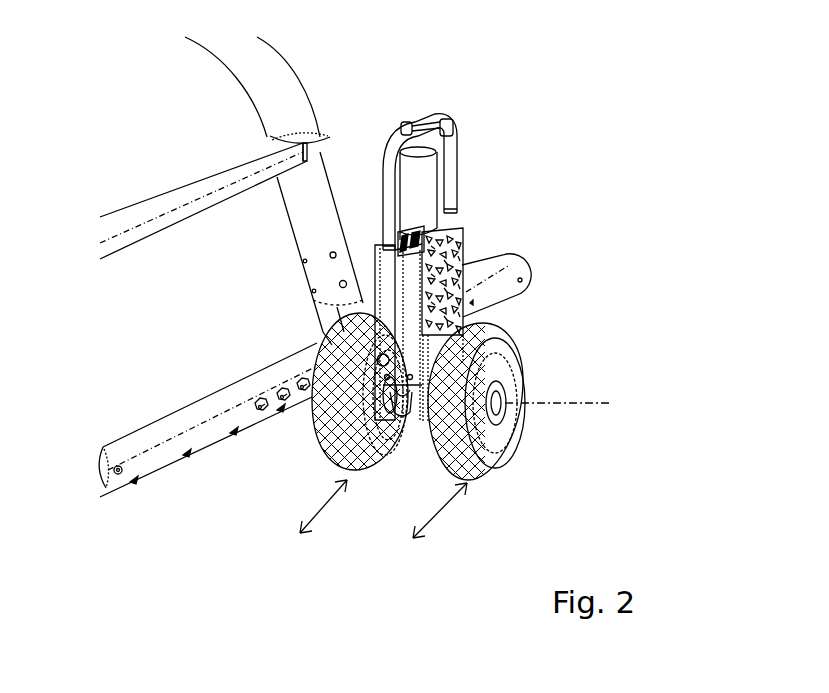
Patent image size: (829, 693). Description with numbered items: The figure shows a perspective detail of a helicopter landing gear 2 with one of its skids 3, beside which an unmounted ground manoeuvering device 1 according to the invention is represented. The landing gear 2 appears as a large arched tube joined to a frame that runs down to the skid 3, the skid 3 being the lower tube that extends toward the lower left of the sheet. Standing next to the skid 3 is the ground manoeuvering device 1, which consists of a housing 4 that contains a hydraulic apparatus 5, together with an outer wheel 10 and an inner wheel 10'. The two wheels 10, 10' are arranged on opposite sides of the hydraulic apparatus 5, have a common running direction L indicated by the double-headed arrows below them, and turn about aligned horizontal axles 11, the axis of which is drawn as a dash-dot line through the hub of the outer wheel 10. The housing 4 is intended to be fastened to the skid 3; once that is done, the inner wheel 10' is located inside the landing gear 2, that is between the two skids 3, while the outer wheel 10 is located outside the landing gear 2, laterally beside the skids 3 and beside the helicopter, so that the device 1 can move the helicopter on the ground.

The ground manoeuvering device 1 is at (568, 341).
The landing gear 2 is at (272, 82).
The skid 3 is at (162, 445).
The housing 4 is at (460, 275).
The hydraulic apparatus 5 is at (465, 303).
The outer wheel 10 is at (486, 417).
The inner wheel 10' is at (330, 394).
The horizontal axles 11 is at (557, 394).
The running direction L is at (383, 509).